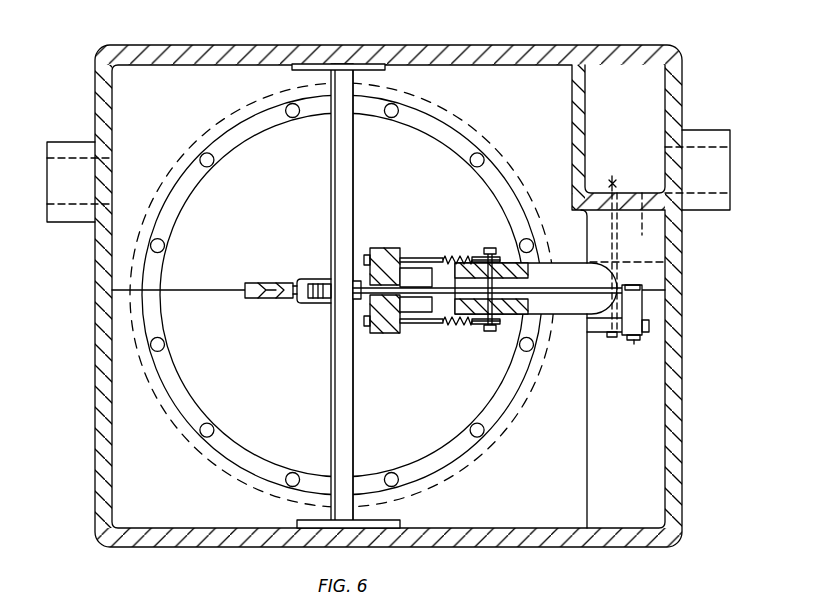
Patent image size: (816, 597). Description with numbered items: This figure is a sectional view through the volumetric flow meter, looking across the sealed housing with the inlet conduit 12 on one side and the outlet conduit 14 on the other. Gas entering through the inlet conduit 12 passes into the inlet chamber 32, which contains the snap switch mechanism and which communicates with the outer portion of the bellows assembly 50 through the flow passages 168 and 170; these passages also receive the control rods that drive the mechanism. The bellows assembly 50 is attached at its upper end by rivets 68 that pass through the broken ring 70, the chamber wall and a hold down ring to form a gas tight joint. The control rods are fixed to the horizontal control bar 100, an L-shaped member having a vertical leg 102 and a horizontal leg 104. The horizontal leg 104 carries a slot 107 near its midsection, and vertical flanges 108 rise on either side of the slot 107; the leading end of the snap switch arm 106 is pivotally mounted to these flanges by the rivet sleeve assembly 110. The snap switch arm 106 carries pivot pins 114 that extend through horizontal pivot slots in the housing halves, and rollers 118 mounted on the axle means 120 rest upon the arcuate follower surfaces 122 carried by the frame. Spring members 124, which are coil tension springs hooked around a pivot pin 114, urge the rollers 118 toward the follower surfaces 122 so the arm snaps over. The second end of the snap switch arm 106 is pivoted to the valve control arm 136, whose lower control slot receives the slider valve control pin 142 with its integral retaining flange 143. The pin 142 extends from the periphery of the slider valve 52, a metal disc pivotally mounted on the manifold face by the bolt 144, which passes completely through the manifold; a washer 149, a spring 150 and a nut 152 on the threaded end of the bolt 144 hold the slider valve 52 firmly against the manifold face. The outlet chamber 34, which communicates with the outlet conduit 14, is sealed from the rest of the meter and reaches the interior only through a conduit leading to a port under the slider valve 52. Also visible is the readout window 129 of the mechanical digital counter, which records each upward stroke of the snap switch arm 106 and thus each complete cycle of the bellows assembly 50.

The inlet conduit 12 is at (57, 143).
The outlet conduit 14 is at (713, 129).
The inlet chamber 32 is at (491, 78).
The outlet chamber 34 is at (623, 74).
The bellows assembly 50 is at (178, 162).
The slider valve 52 is at (650, 325).
The rivets 68 is at (204, 153).
The broken ring 70 is at (513, 181).
The horizontal control bar 100 is at (343, 295).
The vertical leg 102 is at (329, 163).
The horizontal leg 104 is at (354, 163).
The snap switch arm 106 is at (452, 326).
The slot 107 is at (358, 300).
The vertical flanges 108 is at (357, 282).
The rivet sleeve assembly 110 is at (342, 298).
The pivot pins 114 is at (488, 248).
The rollers 118 is at (433, 268).
The axle means 120 is at (418, 313).
The arcuate follower surfaces 122 is at (406, 250).
The spring members 124 is at (456, 256).
The readout window 129 is at (314, 279).
The valve control arm 136 is at (643, 308).
The slider valve control pin 142 is at (631, 342).
The retaining flange 143 is at (641, 338).
The bolt 144 is at (676, 262).
The washer 149 is at (633, 262).
The spring 150 is at (620, 188).
The nut 152 is at (608, 186).
The flow passage 168 is at (398, 522).
The flow passage 170 is at (386, 68).